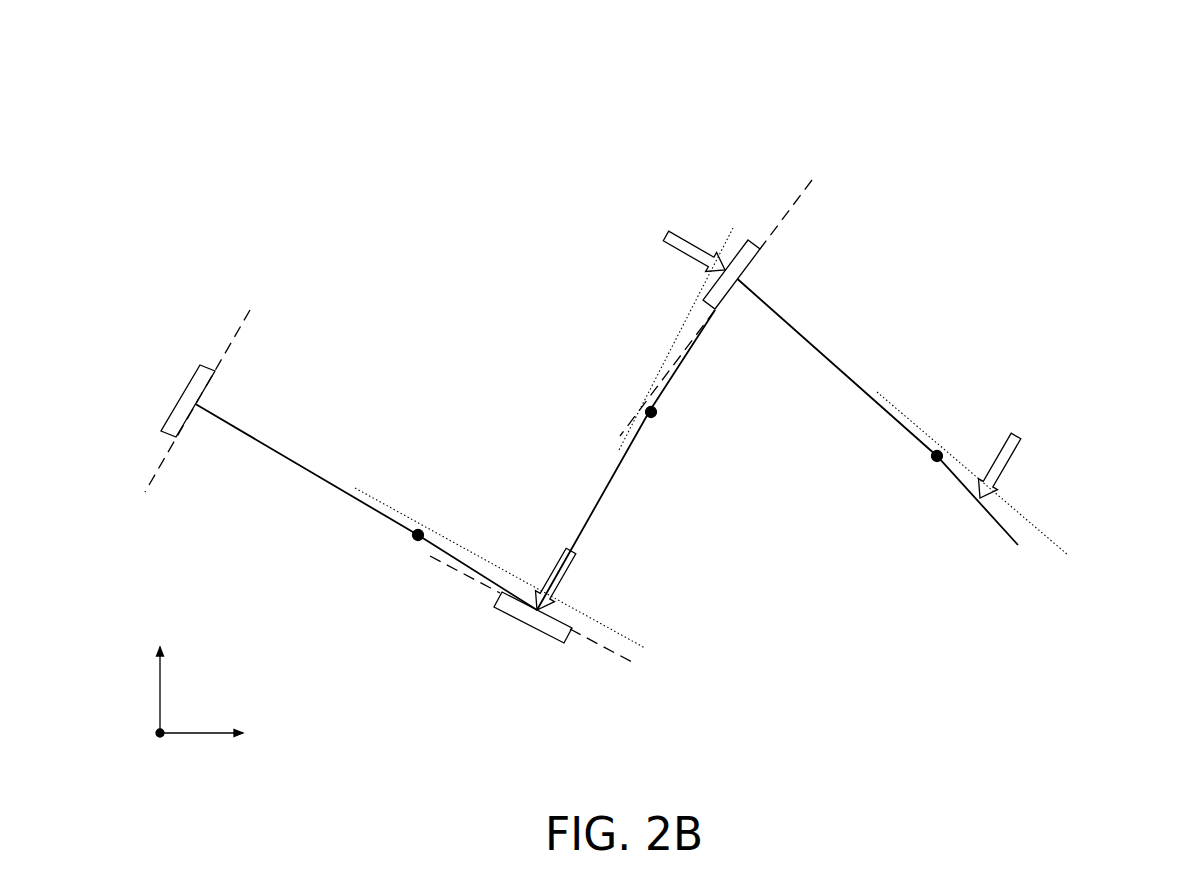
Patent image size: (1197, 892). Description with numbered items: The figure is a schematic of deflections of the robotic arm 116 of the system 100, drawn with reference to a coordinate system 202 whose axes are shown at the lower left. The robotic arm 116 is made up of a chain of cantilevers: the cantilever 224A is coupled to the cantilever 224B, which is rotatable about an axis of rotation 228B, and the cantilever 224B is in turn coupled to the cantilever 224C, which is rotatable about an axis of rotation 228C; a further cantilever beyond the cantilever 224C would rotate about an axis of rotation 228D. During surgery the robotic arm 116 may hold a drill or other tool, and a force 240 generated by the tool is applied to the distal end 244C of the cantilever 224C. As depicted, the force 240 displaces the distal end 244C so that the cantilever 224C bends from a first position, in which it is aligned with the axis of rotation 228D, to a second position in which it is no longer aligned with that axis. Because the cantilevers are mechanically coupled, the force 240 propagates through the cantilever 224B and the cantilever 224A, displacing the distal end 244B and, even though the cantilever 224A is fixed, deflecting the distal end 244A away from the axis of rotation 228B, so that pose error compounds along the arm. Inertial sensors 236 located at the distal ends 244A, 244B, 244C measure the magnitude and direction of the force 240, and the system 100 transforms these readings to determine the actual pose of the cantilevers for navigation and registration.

The system 100 is at (370, 72).
The robotic arm 116 is at (568, 172).
The coordinate system 202 is at (163, 738).
The cantilever 224A is at (200, 365).
The cantilever 224B is at (572, 628).
The cantilever 224C is at (741, 252).
The axis of rotation 228B is at (458, 545).
The axis of rotation 228C is at (687, 310).
The axis of rotation 228D is at (963, 465).
The inertial sensors 236 is at (418, 535).
The force 240 is at (663, 241).
The distal end 244A is at (443, 550).
The distal end 244B is at (705, 332).
The distal end 244C is at (963, 478).